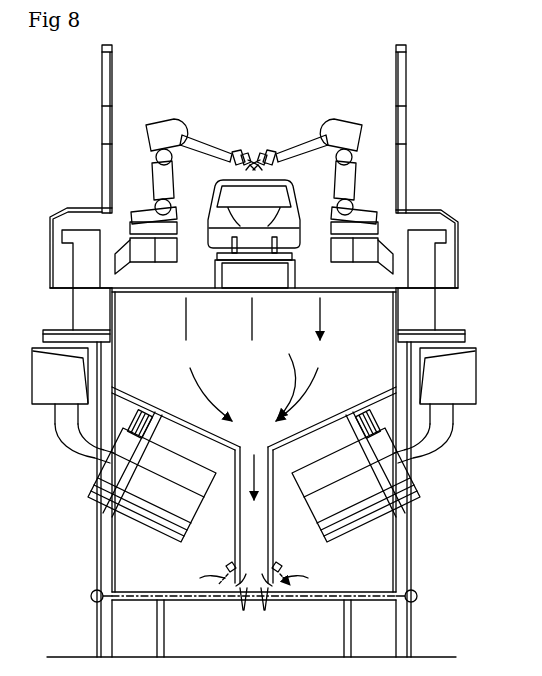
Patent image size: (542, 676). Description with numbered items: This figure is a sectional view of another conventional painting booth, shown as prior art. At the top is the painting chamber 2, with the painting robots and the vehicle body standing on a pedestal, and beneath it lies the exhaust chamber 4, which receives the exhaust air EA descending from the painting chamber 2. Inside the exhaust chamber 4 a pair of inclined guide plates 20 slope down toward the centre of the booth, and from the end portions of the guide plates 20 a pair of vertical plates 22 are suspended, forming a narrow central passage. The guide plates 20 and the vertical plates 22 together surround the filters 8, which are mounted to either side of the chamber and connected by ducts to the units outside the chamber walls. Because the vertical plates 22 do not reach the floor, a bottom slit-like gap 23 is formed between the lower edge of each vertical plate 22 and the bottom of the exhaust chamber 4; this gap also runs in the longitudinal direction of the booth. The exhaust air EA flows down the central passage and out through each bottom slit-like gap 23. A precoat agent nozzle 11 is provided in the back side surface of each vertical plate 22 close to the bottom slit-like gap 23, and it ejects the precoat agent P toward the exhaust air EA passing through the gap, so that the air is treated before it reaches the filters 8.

The painting chamber 2 is at (258, 122).
The exhaust chamber 4 is at (260, 402).
The filters 8 is at (113, 516).
The precoat agent nozzle 11 is at (228, 568).
The guide plates 20 is at (190, 418).
The vertical plates 22 is at (236, 503).
The bottom slit-like gap 23 is at (243, 610).
The exhaust air EA is at (186, 327).
The precoat agent P is at (200, 578).